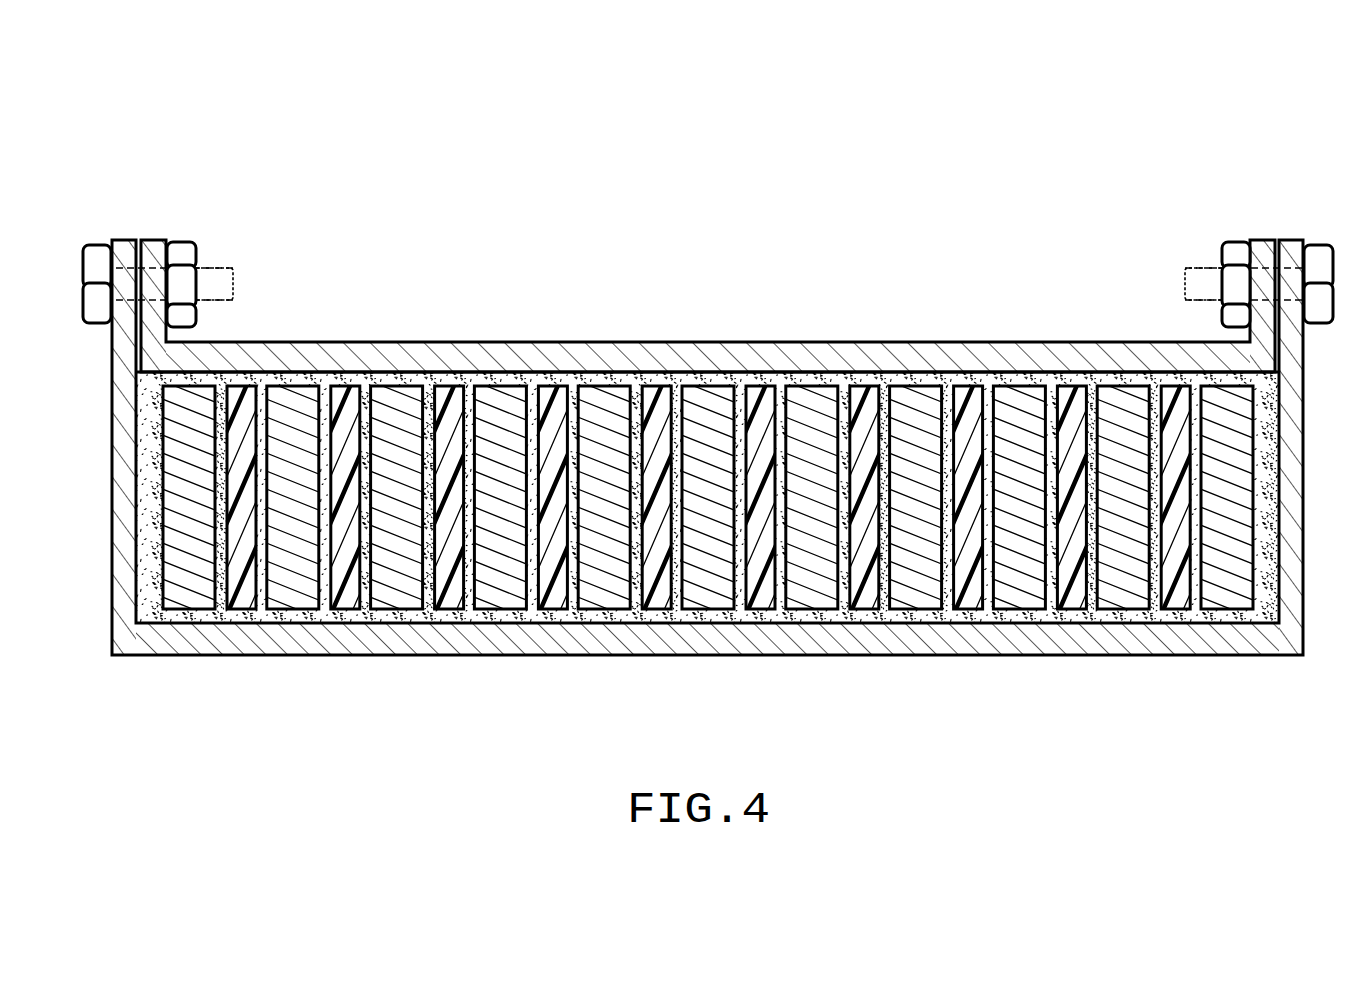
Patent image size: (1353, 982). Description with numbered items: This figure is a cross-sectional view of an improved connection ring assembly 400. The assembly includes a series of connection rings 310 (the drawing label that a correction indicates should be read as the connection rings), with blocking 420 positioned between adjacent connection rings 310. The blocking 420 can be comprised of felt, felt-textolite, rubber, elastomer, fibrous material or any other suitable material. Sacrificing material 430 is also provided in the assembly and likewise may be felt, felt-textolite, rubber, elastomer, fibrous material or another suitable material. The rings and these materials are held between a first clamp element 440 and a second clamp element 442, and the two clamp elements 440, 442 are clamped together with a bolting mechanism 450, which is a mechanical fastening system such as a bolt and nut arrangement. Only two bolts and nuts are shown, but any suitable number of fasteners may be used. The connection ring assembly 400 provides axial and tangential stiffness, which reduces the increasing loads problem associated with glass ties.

The connection ring assembly 400 is at (1022, 138).
The connection rings 310 is at (914, 525).
The blocking 420 is at (955, 420).
The sacrificing material 430 is at (1263, 590).
The first clamp element 440 is at (445, 650).
The second clamp element 442 is at (425, 345).
The bolting mechanism 450 is at (228, 275).